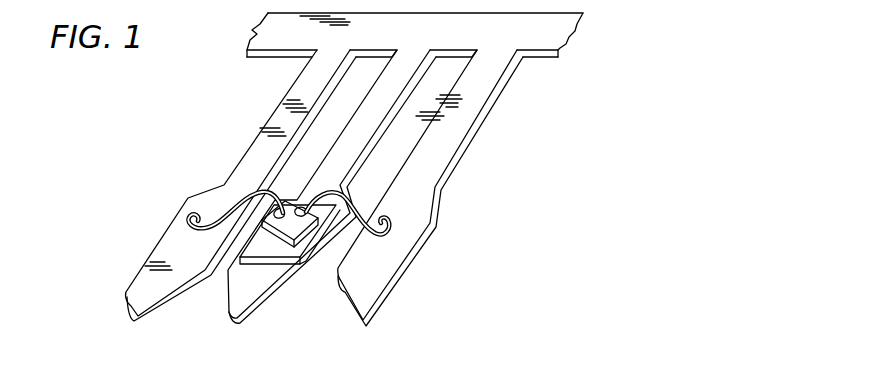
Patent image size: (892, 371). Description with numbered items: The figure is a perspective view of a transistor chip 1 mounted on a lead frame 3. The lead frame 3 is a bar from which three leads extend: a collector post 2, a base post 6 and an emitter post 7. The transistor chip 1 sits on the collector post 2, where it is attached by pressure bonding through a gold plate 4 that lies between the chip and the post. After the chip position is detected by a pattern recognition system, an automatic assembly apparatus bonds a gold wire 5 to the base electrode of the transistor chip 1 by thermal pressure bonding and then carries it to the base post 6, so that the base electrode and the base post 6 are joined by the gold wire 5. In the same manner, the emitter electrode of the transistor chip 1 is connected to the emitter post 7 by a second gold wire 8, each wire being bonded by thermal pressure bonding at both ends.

The transistor chip 1 is at (291, 210).
The collector post 2 is at (235, 306).
The lead frame 3 is at (483, 97).
The gold plate 4 is at (288, 268).
The gold wire 5 is at (362, 208).
The base post 6 is at (392, 268).
The emitter post 7 is at (147, 284).
The gold wire 8 is at (247, 192).